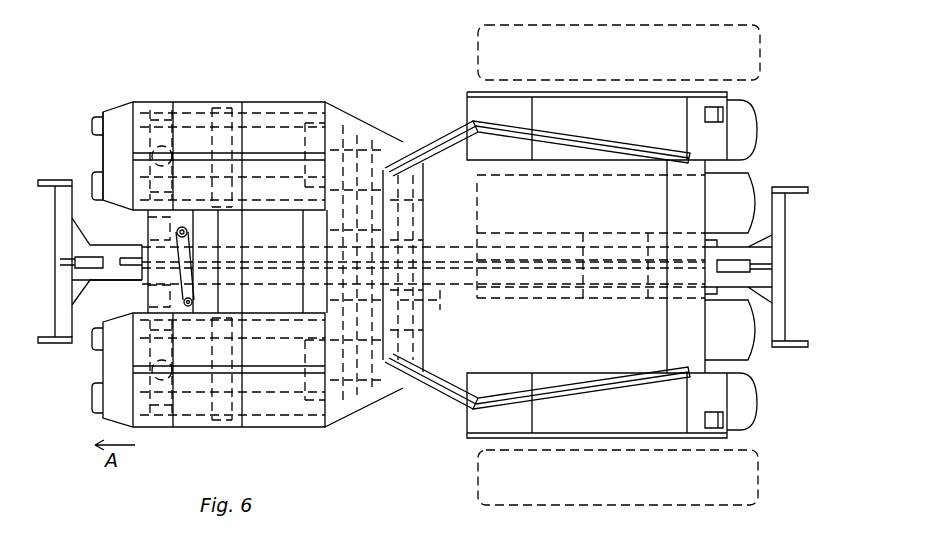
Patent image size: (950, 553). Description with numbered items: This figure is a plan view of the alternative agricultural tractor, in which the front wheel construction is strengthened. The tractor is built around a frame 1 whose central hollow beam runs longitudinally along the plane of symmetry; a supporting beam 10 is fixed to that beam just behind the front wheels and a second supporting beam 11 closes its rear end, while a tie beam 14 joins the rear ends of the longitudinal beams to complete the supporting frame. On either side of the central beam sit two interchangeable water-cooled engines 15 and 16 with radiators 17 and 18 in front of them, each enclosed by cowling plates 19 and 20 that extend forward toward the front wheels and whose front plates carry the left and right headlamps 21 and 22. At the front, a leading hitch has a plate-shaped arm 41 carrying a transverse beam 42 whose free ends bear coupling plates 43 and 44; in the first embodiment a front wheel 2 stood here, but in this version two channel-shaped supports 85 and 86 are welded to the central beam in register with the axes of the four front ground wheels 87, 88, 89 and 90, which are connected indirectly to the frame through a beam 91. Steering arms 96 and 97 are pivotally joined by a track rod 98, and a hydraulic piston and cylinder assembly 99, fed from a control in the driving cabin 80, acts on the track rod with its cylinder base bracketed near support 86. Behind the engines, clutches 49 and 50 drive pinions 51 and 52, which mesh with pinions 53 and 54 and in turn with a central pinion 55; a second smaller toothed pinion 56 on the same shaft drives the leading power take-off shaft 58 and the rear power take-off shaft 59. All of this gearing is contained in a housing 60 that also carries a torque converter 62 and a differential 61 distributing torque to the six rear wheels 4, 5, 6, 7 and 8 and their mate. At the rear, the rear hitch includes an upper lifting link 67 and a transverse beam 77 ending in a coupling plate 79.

The frame 1 is at (301, 256).
The front wheel 2 is at (478, 47).
The rear wheel 4 is at (555, 507).
The rear wheel 5 is at (758, 404).
The rear wheel 6 is at (745, 350).
The rear wheel 7 is at (742, 188).
The rear wheel 8 is at (748, 112).
The supporting beam 10 is at (254, 180).
The second supporting beam 11 is at (298, 131).
The tie beam 14 is at (425, 190).
The engine 15 is at (275, 430).
The engine 16 is at (252, 110).
The radiator 17 is at (207, 437).
The radiator 18 is at (247, 82).
The cowling plates 19 is at (252, 430).
The cowling plates 20 is at (268, 101).
The headlamp 21 is at (93, 365).
The headlamp 22 is at (95, 152).
The plate-shaped arm 41 is at (98, 244).
The transverse beam 42 is at (60, 235).
The coupling plate 43 is at (50, 344).
The coupling plate 44 is at (46, 186).
The clutch 49 is at (360, 425).
The clutch 50 is at (362, 114).
The pinion 51 is at (392, 412).
The pinion 52 is at (398, 128).
The pinion 53 is at (428, 335).
The pinion 54 is at (427, 225).
The central pinion 55 is at (480, 222).
The second smaller toothed pinion 56 is at (360, 298).
The leading power take-off shaft 58 is at (300, 342).
The rear power take-off shaft 59 is at (608, 290).
The housing 60 is at (553, 250).
The differential 61 is at (612, 226).
The torque converter 62 is at (478, 305).
The upper lifting link 67 is at (736, 260).
The transverse beam 77 is at (783, 237).
The coupling plate 79 is at (796, 187).
The driving cabin 80 is at (630, 142).
The support 85 is at (147, 298).
The support 86 is at (137, 238).
The front ground wheel 87 is at (93, 400).
The front ground wheel 88 is at (76, 284).
The front ground wheel 89 is at (93, 184).
The front ground wheel 90 is at (93, 121).
The beam 91 is at (178, 98).
The steering arm 96 is at (198, 420).
The steering arm 97 is at (205, 100).
The track rod 98 is at (187, 293).
The hydraulic piston and cylinder assembly 99 is at (199, 248).